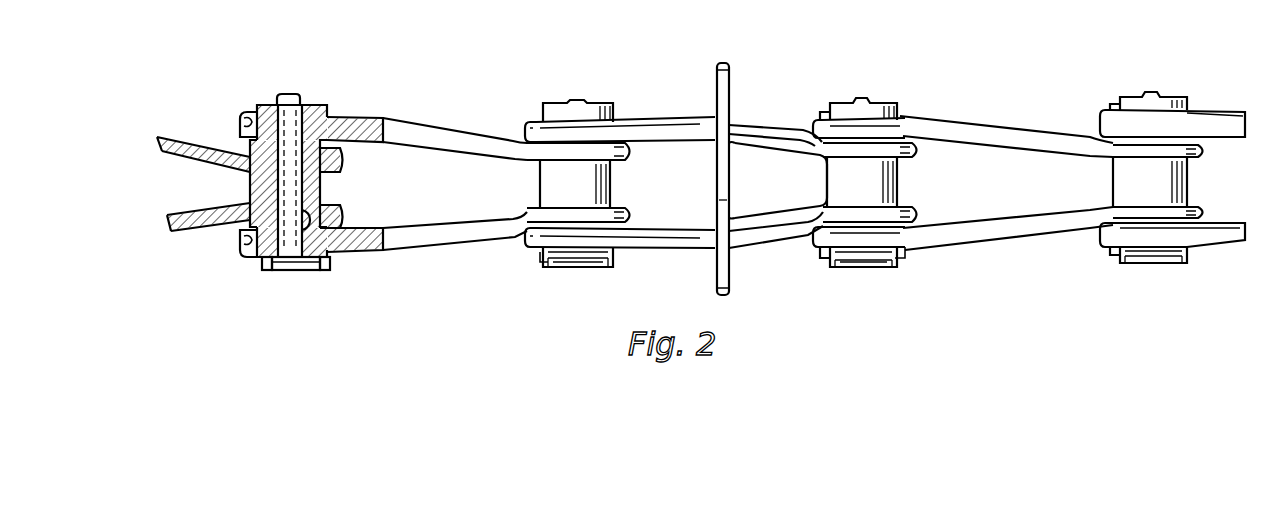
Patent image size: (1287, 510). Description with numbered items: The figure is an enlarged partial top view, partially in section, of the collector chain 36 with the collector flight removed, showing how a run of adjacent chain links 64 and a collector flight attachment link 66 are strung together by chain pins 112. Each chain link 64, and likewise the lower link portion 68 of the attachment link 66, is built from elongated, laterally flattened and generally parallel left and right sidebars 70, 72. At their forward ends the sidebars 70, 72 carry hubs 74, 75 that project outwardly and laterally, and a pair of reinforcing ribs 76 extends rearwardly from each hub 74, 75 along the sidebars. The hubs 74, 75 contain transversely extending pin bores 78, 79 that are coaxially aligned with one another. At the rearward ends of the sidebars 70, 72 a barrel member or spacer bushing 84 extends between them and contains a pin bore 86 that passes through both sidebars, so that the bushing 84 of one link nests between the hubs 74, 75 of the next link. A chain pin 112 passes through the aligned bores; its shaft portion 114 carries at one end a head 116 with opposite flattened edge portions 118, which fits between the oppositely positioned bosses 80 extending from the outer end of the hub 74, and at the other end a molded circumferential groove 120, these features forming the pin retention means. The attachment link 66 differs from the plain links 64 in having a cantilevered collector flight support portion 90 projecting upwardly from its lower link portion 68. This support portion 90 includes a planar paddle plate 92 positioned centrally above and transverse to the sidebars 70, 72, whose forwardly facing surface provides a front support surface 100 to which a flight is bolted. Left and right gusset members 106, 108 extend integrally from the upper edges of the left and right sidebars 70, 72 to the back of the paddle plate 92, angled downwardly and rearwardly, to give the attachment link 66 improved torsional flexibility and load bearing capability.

The chain 36 is at (871, 62).
The chain link 64 is at (467, 132).
The collector flight attachment link 66 is at (753, 123).
The lower link portion 68 is at (711, 251).
The left sidebar 70 is at (462, 240).
The right sidebar 72 is at (497, 137).
The hub 74 is at (262, 266).
The hub 75 is at (326, 107).
The reinforcing rib 76 is at (363, 118).
The pin bore 78 is at (298, 214).
The pin bore 79 is at (291, 96).
The boss 80 is at (270, 271).
The spacer bushing 84 is at (318, 180).
The pin bore 86 is at (283, 166).
The collector flight support portion 90 is at (746, 69).
The paddle plate 92 is at (716, 200).
The front support surface 100 is at (717, 150).
The left gusset member 106 is at (788, 214).
The right gusset member 108 is at (800, 148).
The chain pin 112 is at (311, 276).
The shaft portion 114 is at (283, 193).
The head 116 is at (290, 272).
The flattened edge portion 118 is at (265, 263).
The circumferential groove 120 is at (268, 104).